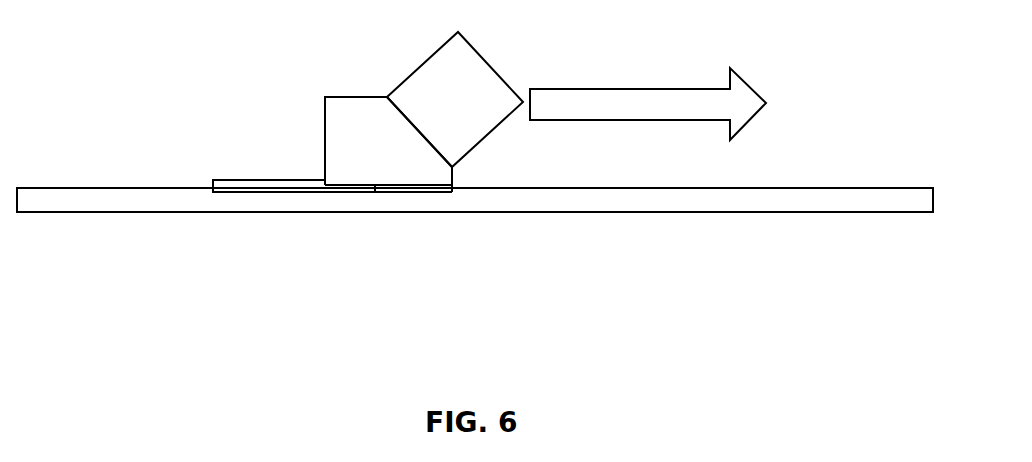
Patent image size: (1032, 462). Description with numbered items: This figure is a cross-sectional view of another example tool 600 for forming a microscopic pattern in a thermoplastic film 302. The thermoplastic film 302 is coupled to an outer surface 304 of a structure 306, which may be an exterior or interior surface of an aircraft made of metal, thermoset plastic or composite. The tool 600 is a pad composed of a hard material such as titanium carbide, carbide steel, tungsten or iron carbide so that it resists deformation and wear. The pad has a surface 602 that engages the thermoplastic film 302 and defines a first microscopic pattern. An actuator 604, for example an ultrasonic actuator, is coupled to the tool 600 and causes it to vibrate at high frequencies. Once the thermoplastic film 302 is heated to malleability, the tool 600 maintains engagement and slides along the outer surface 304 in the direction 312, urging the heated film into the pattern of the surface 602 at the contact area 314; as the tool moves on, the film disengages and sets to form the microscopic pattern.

The thermoplastic film 302 is at (237, 191).
The outer surface 304 is at (592, 188).
The structure 306 is at (628, 201).
The direction 312 is at (645, 89).
The contact area 314 is at (421, 203).
The tool 600 is at (343, 97).
The surface 602 is at (376, 187).
The actuator 604 is at (437, 52).